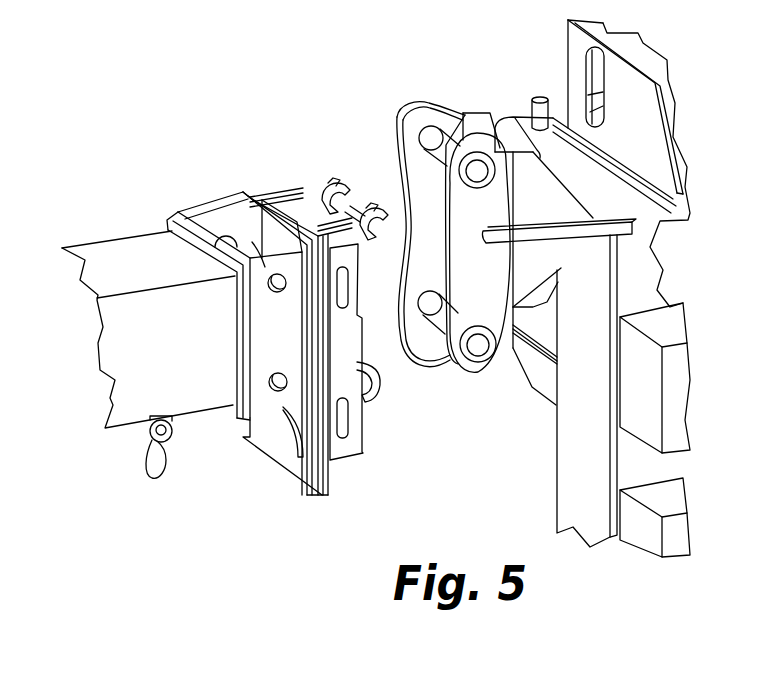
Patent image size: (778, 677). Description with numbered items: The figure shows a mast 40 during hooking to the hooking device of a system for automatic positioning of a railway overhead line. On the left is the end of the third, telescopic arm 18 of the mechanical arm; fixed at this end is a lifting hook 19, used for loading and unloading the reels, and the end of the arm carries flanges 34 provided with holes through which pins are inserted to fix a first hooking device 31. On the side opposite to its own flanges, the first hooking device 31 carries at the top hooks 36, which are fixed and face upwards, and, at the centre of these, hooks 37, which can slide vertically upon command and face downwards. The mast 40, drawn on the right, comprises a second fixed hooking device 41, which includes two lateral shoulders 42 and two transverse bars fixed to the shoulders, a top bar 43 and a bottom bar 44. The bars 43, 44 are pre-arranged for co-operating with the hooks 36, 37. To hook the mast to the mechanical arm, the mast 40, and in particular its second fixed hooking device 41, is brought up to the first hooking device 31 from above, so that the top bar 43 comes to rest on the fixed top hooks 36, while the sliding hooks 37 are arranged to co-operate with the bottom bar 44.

The third telescopic arm 18 is at (185, 357).
The lifting hook 19 is at (148, 455).
The first hooking device 31 is at (348, 455).
The flanges 34 is at (283, 343).
The hooks 36 is at (363, 285).
The hooks 37 is at (378, 398).
The mast 40 is at (538, 63).
The second fixed hooking device 41 is at (422, 218).
The lateral shoulders 42 is at (446, 256).
The top bar 43 is at (440, 130).
The bottom bar 44 is at (437, 323).